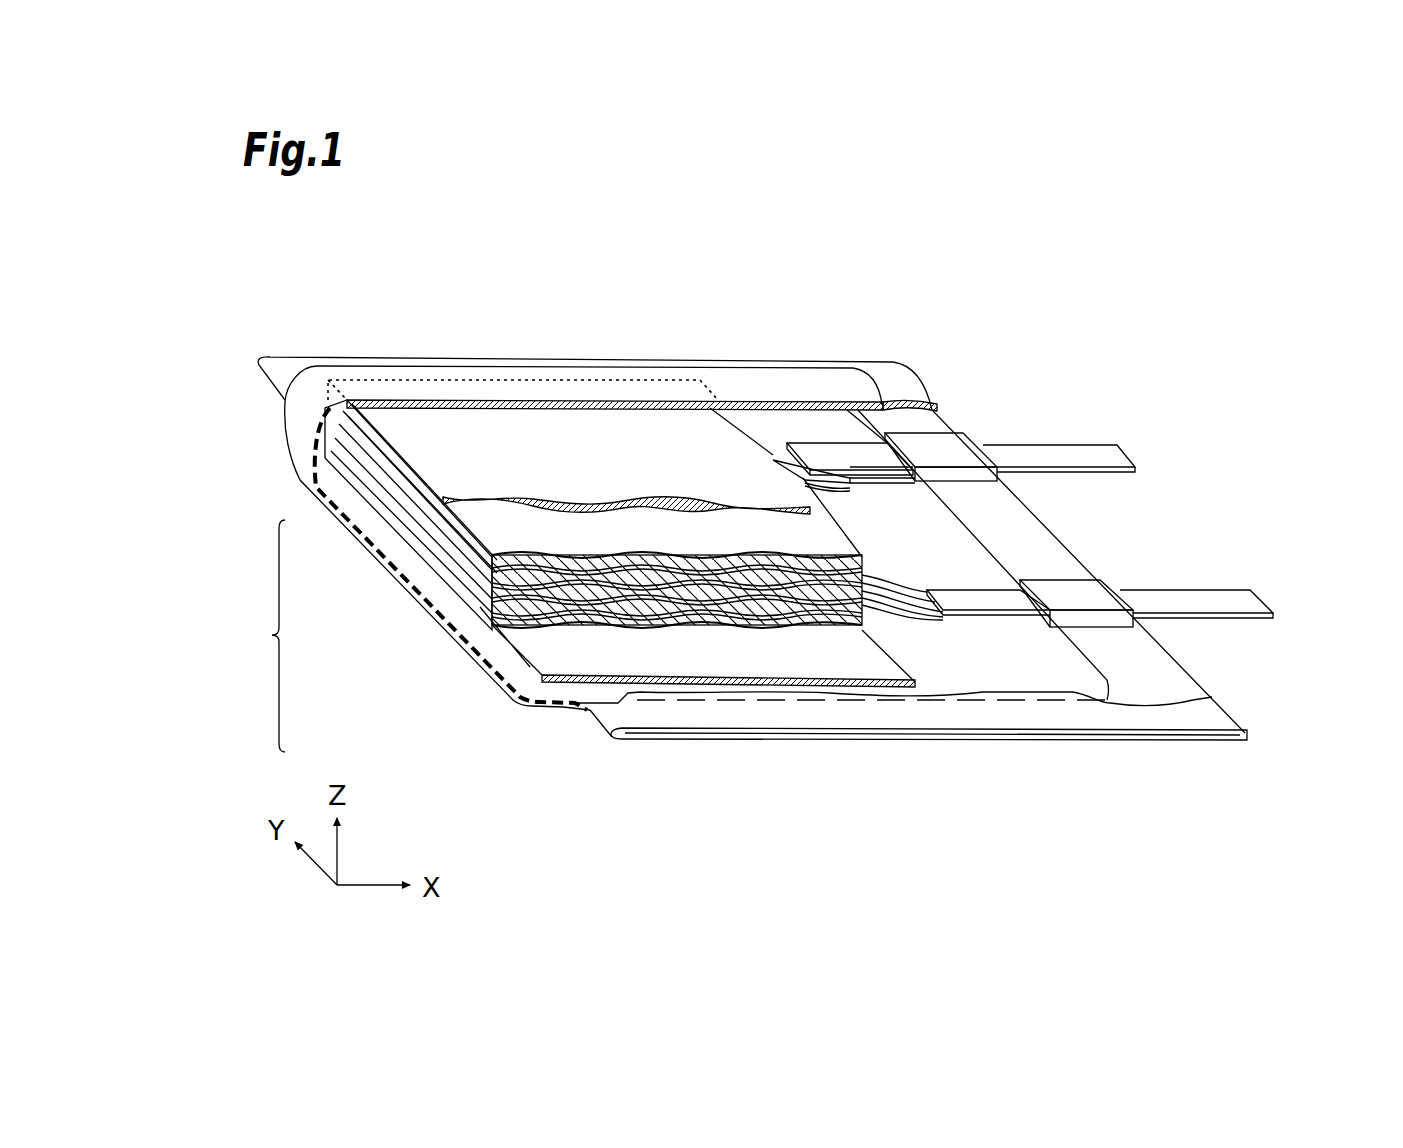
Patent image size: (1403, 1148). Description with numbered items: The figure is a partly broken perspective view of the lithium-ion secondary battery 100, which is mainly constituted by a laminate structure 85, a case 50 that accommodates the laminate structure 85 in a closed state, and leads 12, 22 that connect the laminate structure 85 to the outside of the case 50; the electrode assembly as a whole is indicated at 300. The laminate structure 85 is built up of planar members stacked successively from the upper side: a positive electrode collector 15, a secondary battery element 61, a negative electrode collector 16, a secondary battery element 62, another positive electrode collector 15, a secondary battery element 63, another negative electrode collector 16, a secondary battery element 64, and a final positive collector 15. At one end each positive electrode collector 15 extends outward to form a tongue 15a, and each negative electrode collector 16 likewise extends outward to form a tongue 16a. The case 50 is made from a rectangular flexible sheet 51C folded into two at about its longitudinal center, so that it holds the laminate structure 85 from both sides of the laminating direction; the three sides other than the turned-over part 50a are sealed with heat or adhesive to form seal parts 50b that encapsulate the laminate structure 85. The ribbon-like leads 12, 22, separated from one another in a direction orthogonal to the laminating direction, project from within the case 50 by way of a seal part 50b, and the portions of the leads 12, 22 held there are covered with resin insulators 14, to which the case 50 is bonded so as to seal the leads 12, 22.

The lithium-ion secondary battery 100 is at (756, 230).
The electrode assembly 300 is at (1132, 788).
The laminate structure 85 is at (580, 576).
The case 50 is at (581, 360).
The turned-over part 50a is at (300, 417).
The seal part 50b is at (660, 367).
The rectangular flexible sheet 51C is at (732, 370).
The positive electrode collector 15 is at (425, 487).
The tongue 15a is at (776, 460).
The negative electrode collector 16 is at (447, 522).
The tongue 16a is at (893, 579).
The secondary battery element 61 is at (438, 505).
The secondary battery element 62 is at (455, 540).
The secondary battery element 63 is at (463, 578).
The secondary battery element 64 is at (470, 612).
The insulator 14 is at (958, 450).
The lead 12 is at (1127, 452).
The lead 22 is at (1262, 598).